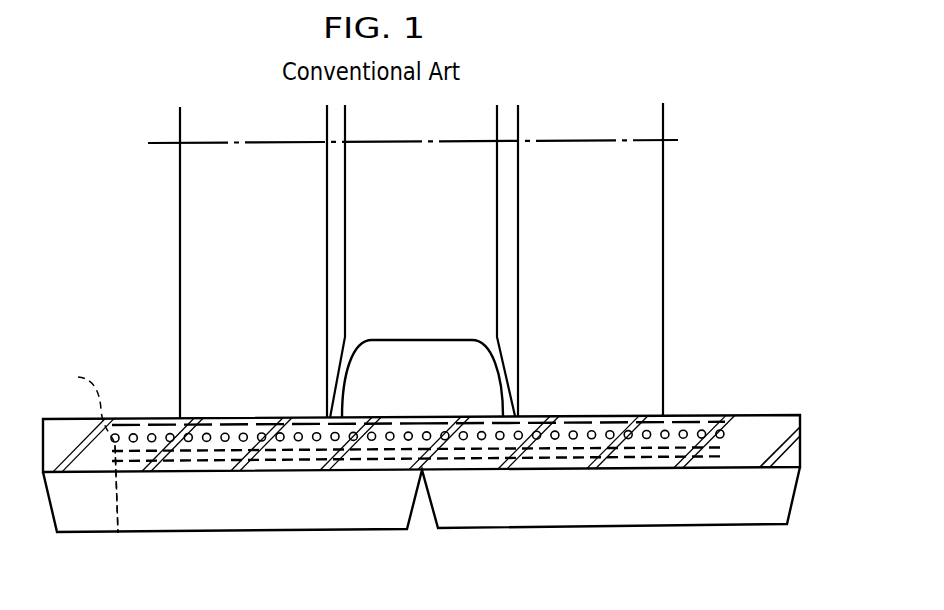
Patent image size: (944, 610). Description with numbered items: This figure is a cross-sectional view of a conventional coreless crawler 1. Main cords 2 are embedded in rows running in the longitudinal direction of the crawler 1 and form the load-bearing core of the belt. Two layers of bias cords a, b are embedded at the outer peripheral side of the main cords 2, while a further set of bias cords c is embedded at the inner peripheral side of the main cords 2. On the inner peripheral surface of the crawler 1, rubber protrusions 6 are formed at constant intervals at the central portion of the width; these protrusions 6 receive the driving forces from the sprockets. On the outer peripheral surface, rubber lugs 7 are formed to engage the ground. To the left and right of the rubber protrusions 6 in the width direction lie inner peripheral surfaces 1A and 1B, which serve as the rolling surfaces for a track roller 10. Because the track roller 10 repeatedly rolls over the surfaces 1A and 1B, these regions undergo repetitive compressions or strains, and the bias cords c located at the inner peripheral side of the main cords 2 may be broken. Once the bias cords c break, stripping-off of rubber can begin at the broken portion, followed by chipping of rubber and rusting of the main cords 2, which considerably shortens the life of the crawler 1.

The coreless crawler 1 is at (780, 423).
The inner peripheral surface 1A is at (573, 415).
The inner peripheral surface 1B is at (245, 417).
The main cords 2 is at (703, 431).
The rubber protrusions 6 is at (424, 352).
The rubber lugs 7 is at (306, 530).
The track roller 10 is at (436, 123).
The bias cords a is at (115, 507).
The bias cords b is at (87, 447).
The bias cords c is at (153, 417).